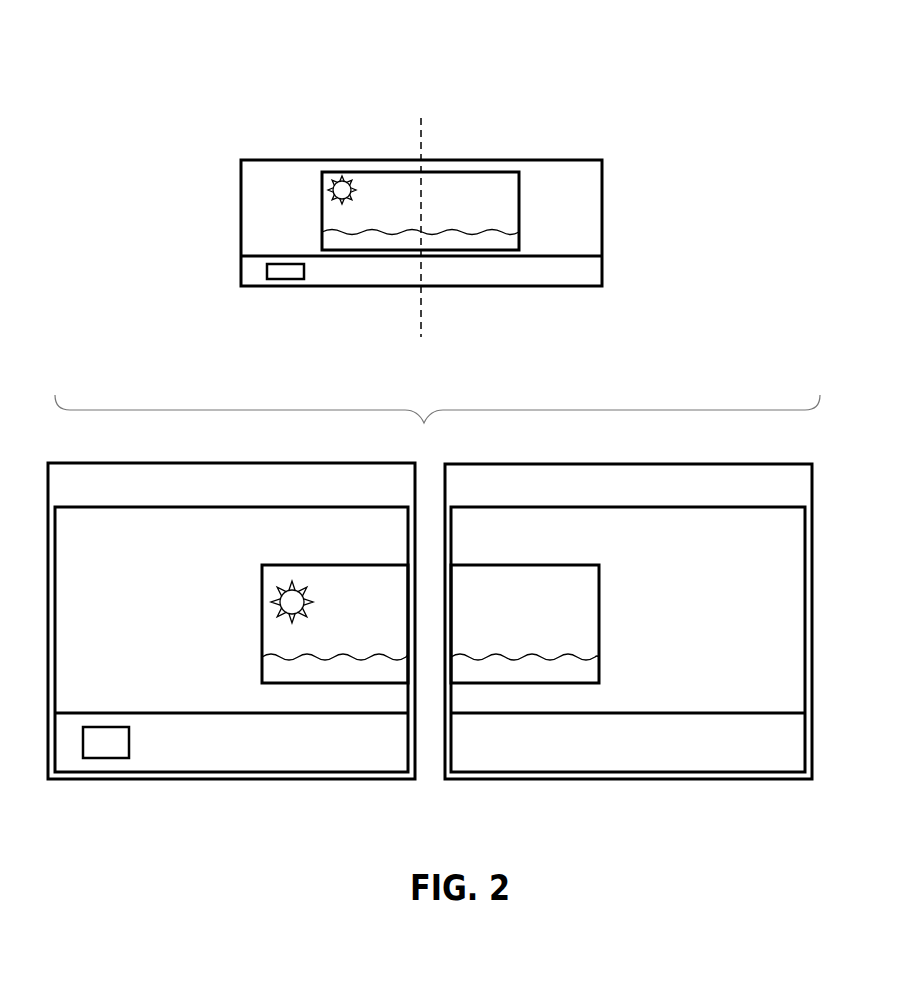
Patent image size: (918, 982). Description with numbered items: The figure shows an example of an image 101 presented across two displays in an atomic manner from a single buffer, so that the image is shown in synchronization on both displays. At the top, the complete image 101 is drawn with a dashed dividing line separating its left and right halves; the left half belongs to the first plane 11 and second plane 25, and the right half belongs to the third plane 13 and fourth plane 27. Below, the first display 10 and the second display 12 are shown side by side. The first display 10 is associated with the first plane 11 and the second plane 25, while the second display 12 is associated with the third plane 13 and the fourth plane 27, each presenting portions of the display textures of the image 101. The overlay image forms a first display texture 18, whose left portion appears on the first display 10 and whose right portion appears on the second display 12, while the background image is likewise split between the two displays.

The image 101 is at (399, 66).
The first display 10 is at (231, 640).
The second display 12 is at (628, 640).
The first plane 11 is at (331, 249).
The second plane 25 is at (331, 249).
The third plane 13 is at (511, 249).
The fourth plane 27 is at (511, 249).
The first display texture 18 is at (519, 220).